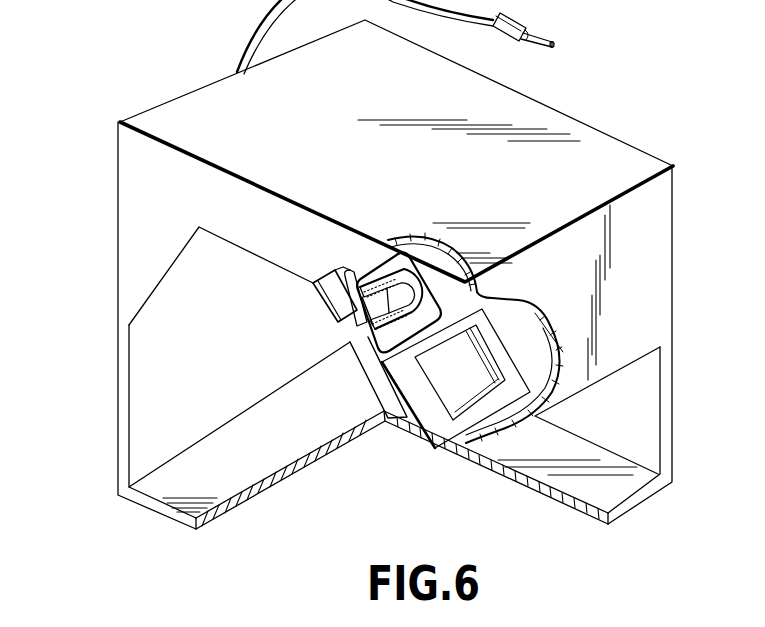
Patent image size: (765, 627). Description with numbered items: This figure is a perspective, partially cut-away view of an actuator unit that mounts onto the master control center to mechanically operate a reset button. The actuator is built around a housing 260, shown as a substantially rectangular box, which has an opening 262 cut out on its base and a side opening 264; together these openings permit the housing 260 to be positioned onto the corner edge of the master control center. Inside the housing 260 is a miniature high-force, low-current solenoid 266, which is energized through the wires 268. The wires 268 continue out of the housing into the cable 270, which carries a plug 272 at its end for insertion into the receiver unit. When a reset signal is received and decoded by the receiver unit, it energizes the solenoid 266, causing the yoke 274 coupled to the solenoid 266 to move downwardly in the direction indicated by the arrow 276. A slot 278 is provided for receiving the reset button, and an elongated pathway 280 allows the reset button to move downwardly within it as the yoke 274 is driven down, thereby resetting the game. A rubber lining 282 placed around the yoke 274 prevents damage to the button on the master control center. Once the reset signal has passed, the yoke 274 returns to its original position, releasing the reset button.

The housing 260 is at (579, 141).
The opening 262 is at (357, 463).
The side opening 264 is at (160, 371).
The solenoid 266 is at (447, 446).
The wires 268 is at (564, 392).
The cable 270 is at (258, 28).
The plug 272 is at (522, 28).
The yoke 274 is at (400, 258).
The arrow 276 is at (444, 283).
The slot 278 is at (346, 330).
The elongated pathway 280 is at (343, 272).
The rubber lining 282 is at (374, 280).